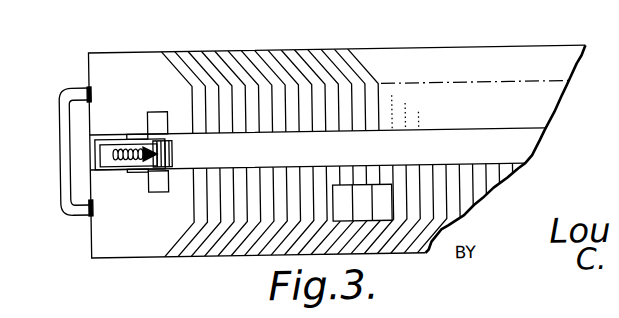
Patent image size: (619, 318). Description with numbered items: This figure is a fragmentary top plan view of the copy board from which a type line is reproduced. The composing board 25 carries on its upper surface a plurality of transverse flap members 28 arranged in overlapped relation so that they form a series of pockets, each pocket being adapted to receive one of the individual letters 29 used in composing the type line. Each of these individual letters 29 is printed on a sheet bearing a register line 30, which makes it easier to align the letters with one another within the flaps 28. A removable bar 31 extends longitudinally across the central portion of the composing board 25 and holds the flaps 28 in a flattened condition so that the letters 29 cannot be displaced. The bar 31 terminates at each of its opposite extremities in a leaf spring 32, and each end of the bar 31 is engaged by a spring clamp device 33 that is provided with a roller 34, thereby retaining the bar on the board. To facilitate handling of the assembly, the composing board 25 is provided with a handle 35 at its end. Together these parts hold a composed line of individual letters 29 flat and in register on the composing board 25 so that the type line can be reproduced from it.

The composing board 25 is at (122, 68).
The transverse flap members 28 is at (211, 64).
The individual letters 29 is at (387, 224).
The register line 30 is at (343, 189).
The removable bar 31 is at (538, 151).
The leaf spring 32 is at (163, 107).
The spring clamp device 33 is at (127, 127).
The roller 34 is at (168, 159).
The handle 35 is at (62, 99).